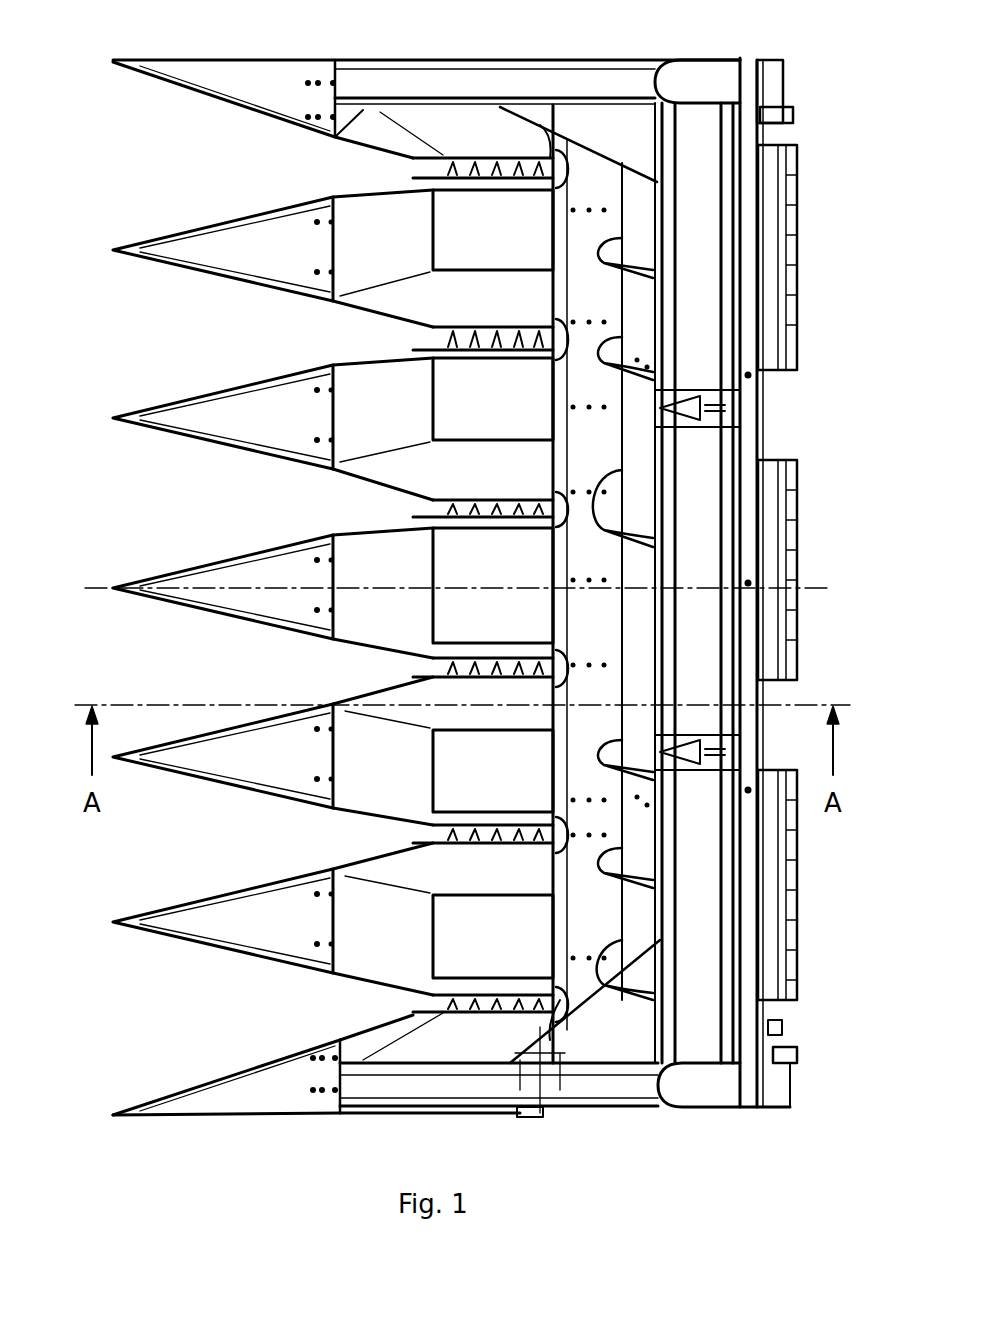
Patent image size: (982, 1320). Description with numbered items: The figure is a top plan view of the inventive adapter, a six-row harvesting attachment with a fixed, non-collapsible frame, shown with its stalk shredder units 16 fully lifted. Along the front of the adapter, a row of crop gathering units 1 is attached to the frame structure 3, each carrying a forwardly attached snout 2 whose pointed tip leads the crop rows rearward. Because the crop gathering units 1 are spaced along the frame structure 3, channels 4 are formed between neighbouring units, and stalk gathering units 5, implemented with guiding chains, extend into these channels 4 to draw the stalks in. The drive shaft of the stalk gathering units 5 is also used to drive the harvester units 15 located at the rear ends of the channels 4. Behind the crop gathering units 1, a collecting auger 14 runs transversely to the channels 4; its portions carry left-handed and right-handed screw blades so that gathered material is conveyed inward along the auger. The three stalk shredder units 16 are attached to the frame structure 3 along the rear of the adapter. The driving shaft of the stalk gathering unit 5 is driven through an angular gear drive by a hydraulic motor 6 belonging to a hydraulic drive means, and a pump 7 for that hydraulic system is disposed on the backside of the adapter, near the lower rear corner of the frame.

The crop gathering unit 1 is at (378, 790).
The snout 2 is at (248, 918).
The frame structure 3 is at (473, 83).
The channel 4 is at (367, 323).
The stalk gathering unit 5 is at (387, 1010).
The hydraulic motor 6 is at (547, 1113).
The pump 7 is at (780, 1082).
The collecting auger 14 is at (640, 657).
The harvester unit 15 is at (573, 1028).
The stalk shredder unit 16 is at (790, 880).